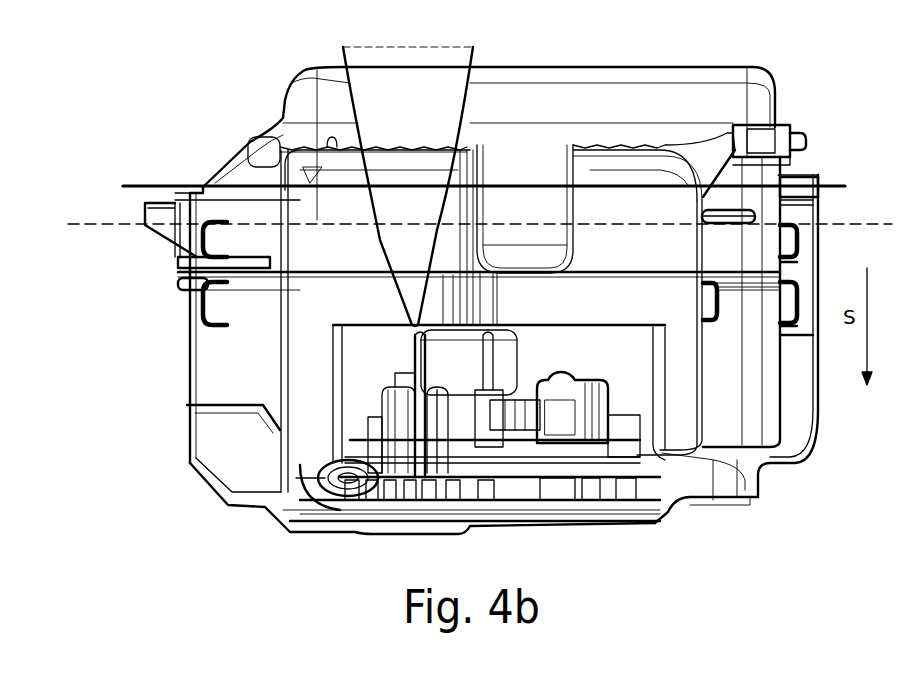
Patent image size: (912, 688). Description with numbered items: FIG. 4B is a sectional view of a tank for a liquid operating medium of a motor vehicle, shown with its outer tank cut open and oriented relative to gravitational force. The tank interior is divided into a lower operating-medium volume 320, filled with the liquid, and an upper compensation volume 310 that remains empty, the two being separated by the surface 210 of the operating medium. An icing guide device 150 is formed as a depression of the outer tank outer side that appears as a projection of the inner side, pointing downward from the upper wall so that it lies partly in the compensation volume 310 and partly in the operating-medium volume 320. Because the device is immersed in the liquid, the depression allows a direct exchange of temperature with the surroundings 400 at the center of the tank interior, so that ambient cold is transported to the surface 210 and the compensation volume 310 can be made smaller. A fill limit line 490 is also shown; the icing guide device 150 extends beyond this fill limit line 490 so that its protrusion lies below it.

The surroundings 400 is at (226, 555).
The fill limit line 490 is at (102, 223).
The icing guide device 150 is at (531, 143).
The compensation volume 310 is at (307, 133).
The operating-medium volume 320 is at (356, 532).
The surface 210 is at (803, 157).